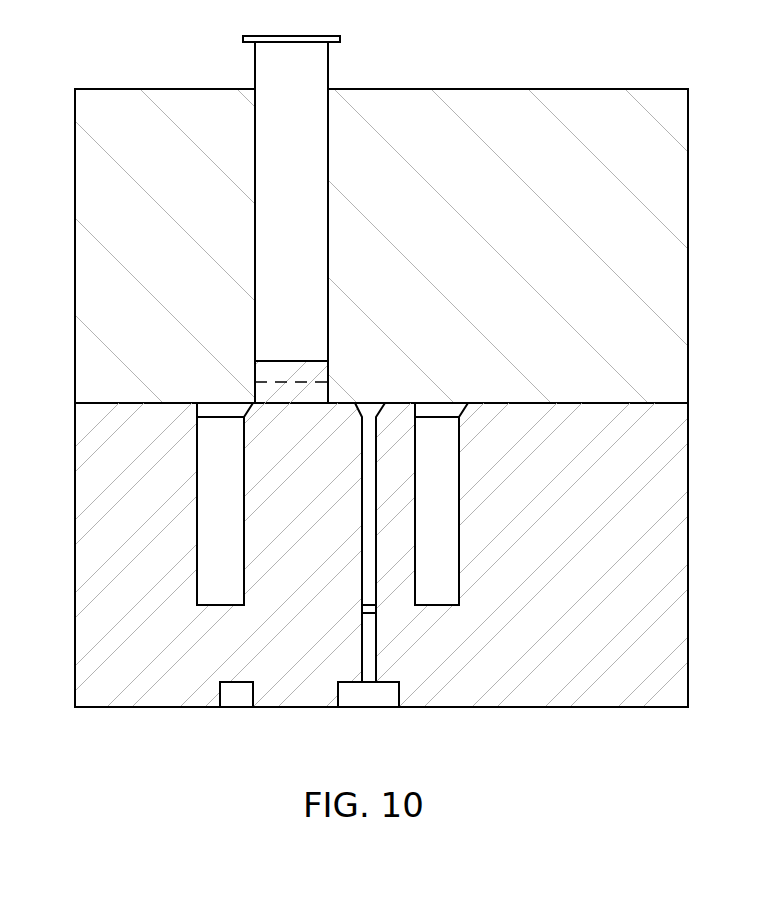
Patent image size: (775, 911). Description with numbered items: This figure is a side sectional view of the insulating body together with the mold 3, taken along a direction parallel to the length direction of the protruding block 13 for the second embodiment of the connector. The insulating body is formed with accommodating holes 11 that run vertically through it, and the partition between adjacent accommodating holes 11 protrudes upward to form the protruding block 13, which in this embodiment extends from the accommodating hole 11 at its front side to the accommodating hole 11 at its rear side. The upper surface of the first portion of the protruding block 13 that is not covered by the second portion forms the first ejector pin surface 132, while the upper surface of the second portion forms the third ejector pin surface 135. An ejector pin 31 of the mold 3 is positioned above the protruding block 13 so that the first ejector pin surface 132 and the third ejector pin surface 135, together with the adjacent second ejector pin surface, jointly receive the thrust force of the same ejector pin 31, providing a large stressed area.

The mold 3 is at (93, 93).
The ejector pin 31 is at (263, 67).
The protruding block 13 is at (288, 365).
The third ejector pin surface 135 is at (273, 358).
The first ejector pin surface 132 is at (268, 382).
The accommodating holes 11 is at (208, 589).